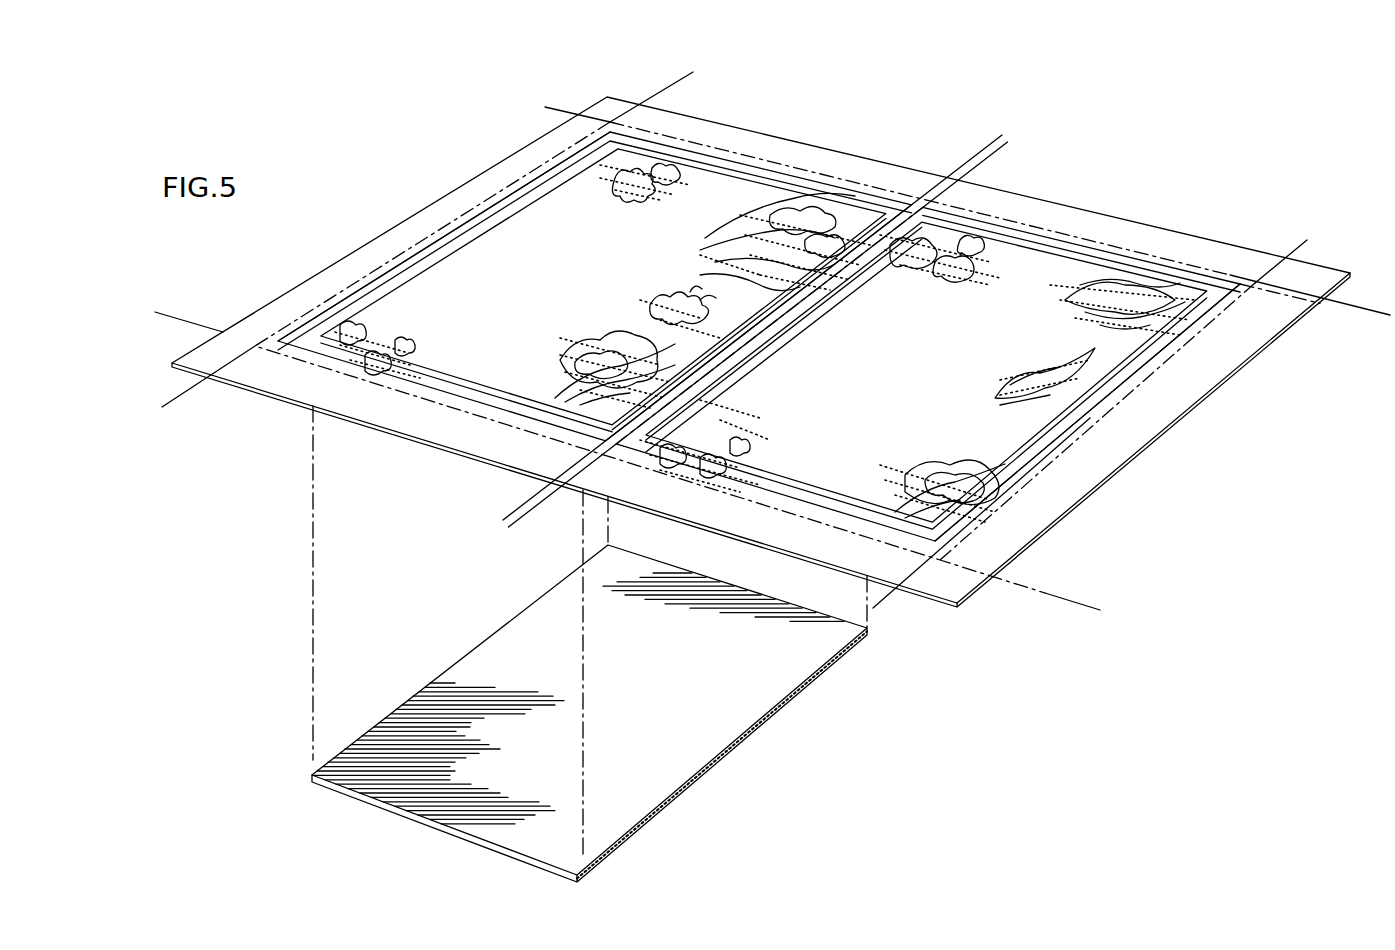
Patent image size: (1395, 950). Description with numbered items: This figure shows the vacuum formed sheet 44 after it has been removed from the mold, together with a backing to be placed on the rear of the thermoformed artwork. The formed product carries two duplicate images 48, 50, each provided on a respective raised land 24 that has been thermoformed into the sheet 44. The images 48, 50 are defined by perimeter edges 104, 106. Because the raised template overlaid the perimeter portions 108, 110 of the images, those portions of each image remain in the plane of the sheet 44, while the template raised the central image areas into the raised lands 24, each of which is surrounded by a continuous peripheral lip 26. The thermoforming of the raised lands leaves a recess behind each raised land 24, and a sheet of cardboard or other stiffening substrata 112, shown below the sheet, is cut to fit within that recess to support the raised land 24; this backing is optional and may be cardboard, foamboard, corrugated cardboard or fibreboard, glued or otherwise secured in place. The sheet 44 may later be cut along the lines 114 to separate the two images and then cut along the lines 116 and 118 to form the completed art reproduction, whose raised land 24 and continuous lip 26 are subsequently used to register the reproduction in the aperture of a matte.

The raised land 24 is at (718, 192).
The continuous peripheral lip 26 is at (453, 383).
The sheet 44 is at (1180, 383).
The duplicate image 48 is at (663, 175).
The duplicate image 50 is at (1113, 297).
The perimeter edge 104 is at (517, 193).
The perimeter edge 106 is at (1240, 282).
The perimeter portion of the image 108 is at (402, 275).
The perimeter portion of the image 110 is at (1017, 470).
The stiffening substrata 112 is at (468, 680).
The cutting lines 114 is at (983, 149).
The cutting lines 116 is at (690, 73).
The cutting lines 118 is at (187, 313).